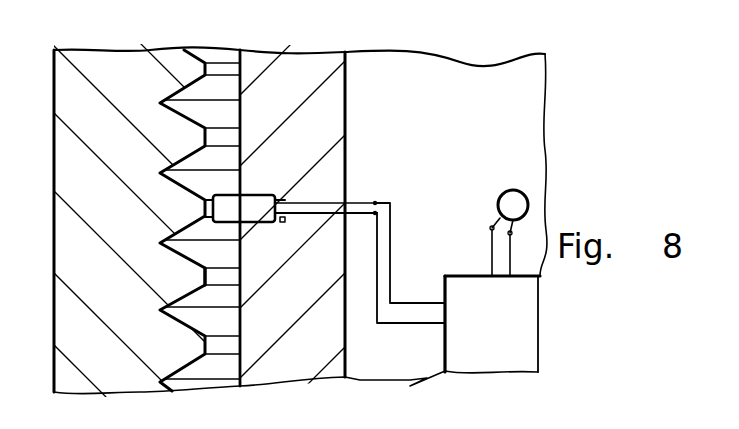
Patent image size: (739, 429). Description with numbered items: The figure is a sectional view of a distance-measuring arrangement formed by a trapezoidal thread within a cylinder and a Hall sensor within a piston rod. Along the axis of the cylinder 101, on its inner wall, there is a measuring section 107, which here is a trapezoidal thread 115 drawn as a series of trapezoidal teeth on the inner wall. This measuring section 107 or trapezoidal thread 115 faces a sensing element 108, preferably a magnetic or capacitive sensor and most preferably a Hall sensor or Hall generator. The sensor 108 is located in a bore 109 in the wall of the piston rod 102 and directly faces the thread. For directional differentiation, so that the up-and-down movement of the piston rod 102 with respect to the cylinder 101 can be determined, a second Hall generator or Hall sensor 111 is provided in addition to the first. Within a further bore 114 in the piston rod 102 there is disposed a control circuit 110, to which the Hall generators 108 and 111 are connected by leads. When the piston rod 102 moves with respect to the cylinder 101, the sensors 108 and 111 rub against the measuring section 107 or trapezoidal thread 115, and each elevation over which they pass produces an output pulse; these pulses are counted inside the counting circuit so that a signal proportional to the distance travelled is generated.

The cylinder 101 is at (97, 62).
The piston rod 102 is at (335, 101).
The measuring section 107 is at (194, 72).
The sensing element 108 is at (248, 202).
The bore 109 is at (285, 219).
The control circuit 110 is at (493, 362).
The Hall sensor 111 is at (512, 197).
The bore 114 is at (343, 368).
The trapezoidal thread 115 is at (205, 278).